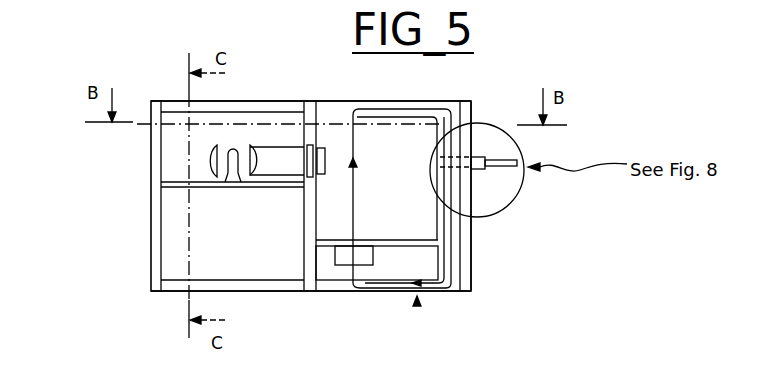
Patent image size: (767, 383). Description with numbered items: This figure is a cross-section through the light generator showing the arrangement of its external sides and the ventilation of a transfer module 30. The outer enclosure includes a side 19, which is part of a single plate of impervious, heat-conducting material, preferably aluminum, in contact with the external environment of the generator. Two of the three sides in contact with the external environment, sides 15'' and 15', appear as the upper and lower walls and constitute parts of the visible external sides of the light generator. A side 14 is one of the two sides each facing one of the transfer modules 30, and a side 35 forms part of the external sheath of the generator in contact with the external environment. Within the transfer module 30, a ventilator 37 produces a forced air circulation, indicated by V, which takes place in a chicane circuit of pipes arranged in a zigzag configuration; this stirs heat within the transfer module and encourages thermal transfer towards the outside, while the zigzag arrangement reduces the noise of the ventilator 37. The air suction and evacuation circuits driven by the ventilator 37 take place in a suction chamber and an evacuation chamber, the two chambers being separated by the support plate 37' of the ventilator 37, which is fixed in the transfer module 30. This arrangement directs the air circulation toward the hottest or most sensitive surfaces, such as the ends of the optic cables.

The side 19 is at (151, 165).
The side 15'' is at (311, 76).
The side 15' is at (311, 323).
The side 14 is at (304, 133).
The forced air circulation V is at (405, 108).
The side 35 is at (465, 262).
The ventilator 37 is at (344, 299).
The support plate 37' is at (377, 296).
The transfer module 30 is at (417, 305).